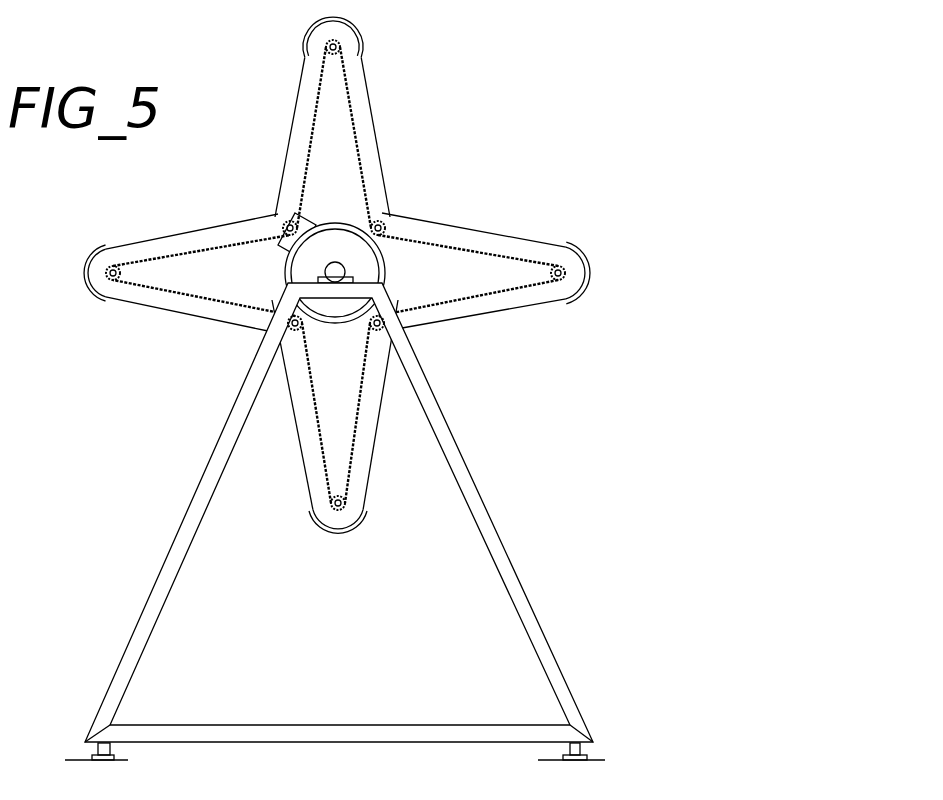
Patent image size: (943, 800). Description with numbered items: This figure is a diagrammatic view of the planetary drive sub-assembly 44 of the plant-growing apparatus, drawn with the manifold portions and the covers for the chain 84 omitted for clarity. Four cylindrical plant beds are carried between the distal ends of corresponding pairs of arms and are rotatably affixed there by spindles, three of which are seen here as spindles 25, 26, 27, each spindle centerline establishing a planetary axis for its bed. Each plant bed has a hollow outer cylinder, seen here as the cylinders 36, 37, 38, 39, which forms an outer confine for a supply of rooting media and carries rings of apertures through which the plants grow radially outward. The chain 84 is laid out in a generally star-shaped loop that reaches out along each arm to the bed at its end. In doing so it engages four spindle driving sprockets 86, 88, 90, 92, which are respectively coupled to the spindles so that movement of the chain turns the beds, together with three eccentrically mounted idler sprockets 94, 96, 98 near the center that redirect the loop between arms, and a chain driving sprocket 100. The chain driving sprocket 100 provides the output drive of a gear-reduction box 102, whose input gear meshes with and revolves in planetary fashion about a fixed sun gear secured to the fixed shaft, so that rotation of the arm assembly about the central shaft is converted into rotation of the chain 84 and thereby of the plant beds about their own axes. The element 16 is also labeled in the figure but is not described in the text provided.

The upper arm 16 is at (336, 55).
The spindle 25 is at (550, 273).
The spindle 26 is at (338, 496).
The spindle 27 is at (121, 273).
The hollow outer cylinder 36 is at (364, 38).
The hollow outer cylinder 37 is at (570, 304).
The hollow outer cylinder 38 is at (314, 531).
The hollow outer cylinder 39 is at (104, 248).
The planetary drive sub-assembly 44 is at (199, 234).
The chain 84 is at (467, 250).
The spindle driving sprocket 86 is at (326, 47).
The spindle driving sprocket 88 is at (570, 265).
The spindle driving sprocket 90 is at (347, 503).
The spindle driving sprocket 92 is at (88, 277).
The eccentric mounted idler sprocket 94 is at (389, 212).
The eccentric mounted idler sprocket 96 is at (383, 327).
The eccentric mounted idler sprocket 98 is at (299, 328).
The chain driving sprocket 100 is at (282, 217).
The gear-reduction box 102 is at (312, 222).